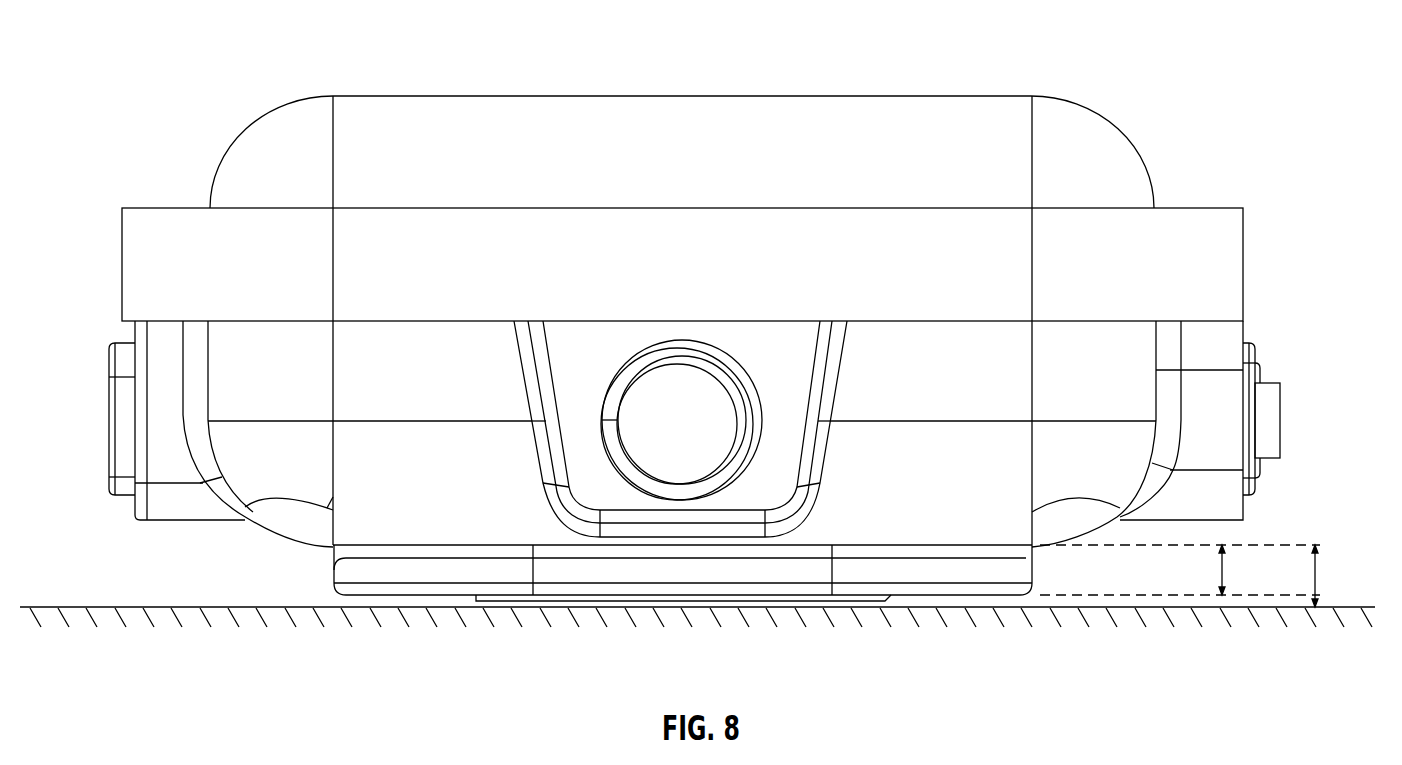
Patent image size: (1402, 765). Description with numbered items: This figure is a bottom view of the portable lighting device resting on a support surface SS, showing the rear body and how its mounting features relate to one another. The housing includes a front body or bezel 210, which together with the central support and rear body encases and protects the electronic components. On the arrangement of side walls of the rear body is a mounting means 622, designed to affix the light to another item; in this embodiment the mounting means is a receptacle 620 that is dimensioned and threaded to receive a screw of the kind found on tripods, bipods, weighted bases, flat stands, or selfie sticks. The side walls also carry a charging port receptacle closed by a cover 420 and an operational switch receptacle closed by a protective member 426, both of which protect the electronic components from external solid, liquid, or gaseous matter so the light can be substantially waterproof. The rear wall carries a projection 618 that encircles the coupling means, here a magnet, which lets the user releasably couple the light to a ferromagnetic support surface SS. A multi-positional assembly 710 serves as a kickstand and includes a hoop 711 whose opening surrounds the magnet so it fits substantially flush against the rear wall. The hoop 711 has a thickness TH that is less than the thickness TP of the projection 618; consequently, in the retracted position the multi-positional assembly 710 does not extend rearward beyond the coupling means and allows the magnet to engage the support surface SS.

The front body or bezel 210 is at (280, 137).
The receptacle 620 is at (727, 363).
The mounting means 622 is at (612, 523).
The protective member 426 is at (127, 483).
The cover 420 is at (1267, 462).
The multi-positional assembly 710 is at (683, 608).
The hoop 711 is at (390, 568).
The projection 618 is at (772, 603).
The support surface SS is at (1092, 612).
The thickness of the hoop TH is at (1223, 573).
The thickness of the projection TP is at (1315, 577).